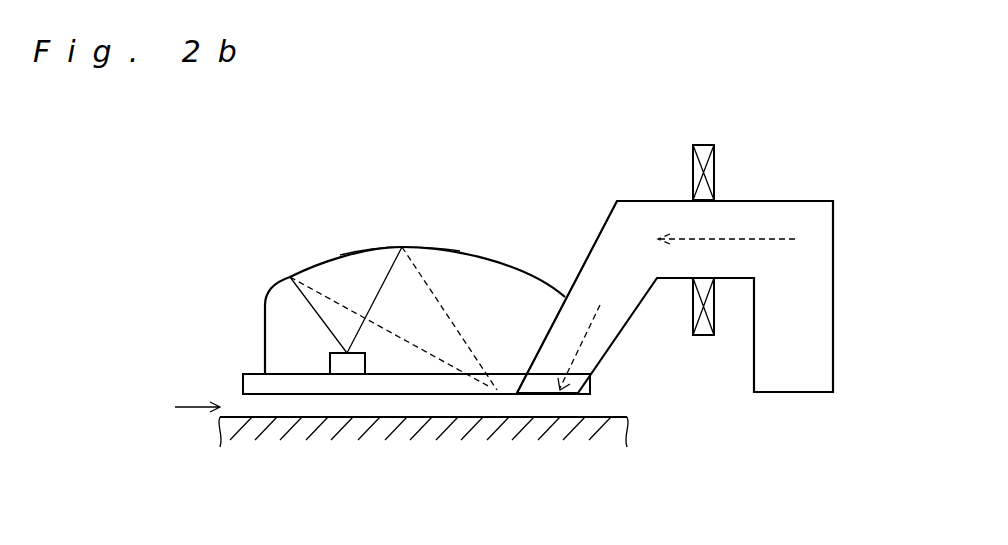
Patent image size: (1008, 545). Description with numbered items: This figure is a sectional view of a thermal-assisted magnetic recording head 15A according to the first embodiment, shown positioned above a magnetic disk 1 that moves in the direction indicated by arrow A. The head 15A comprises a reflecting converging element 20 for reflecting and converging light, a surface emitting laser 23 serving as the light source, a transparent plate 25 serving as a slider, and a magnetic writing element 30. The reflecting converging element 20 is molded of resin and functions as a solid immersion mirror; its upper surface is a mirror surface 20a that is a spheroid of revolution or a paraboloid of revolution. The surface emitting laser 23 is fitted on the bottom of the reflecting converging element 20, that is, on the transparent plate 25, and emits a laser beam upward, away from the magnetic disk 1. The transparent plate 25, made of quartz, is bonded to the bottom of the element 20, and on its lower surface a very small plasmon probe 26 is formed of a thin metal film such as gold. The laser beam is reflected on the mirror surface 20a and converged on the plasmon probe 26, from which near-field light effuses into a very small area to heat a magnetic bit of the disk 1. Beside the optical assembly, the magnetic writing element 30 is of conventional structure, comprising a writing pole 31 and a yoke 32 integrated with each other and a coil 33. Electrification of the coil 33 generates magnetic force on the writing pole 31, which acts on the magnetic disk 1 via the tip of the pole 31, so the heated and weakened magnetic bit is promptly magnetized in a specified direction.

The magnetic disk 1 is at (607, 410).
The direction of light emission A is at (197, 391).
The thermal-assisted magnetic recording head 15A is at (360, 167).
The reflecting converging element 20 is at (265, 340).
The mirror surface 20a is at (358, 252).
The surface emitting laser 23 is at (345, 372).
The transparent plate 25 is at (413, 388).
The plasmon probe 26 is at (497, 392).
The magnetic writing element 30 is at (662, 166).
The writing pole 31 is at (602, 228).
The yoke 32 is at (832, 338).
The coil 33 is at (714, 168).